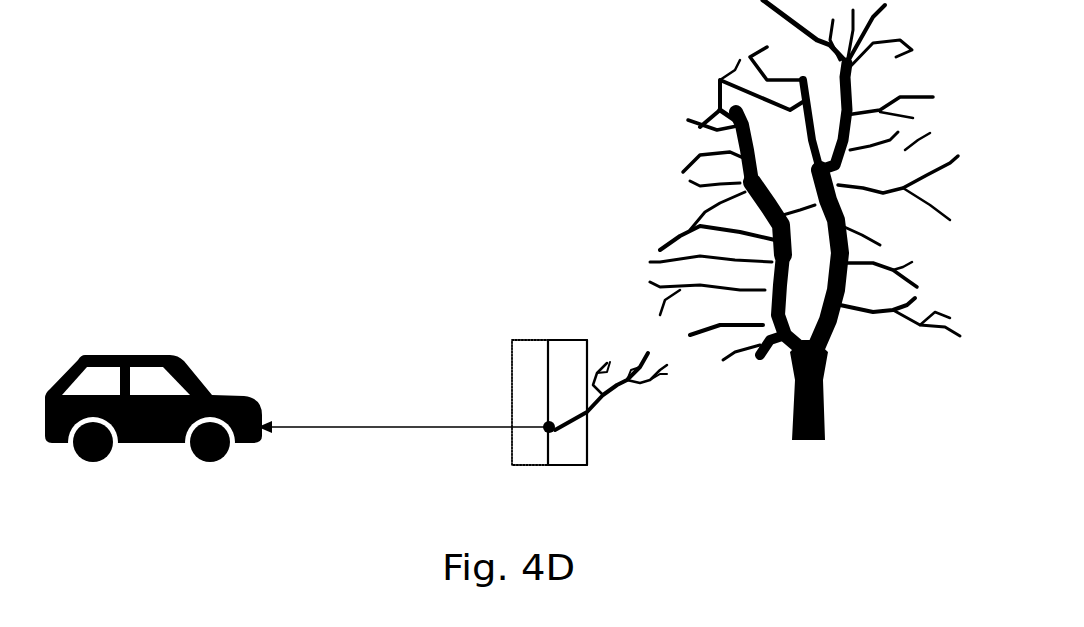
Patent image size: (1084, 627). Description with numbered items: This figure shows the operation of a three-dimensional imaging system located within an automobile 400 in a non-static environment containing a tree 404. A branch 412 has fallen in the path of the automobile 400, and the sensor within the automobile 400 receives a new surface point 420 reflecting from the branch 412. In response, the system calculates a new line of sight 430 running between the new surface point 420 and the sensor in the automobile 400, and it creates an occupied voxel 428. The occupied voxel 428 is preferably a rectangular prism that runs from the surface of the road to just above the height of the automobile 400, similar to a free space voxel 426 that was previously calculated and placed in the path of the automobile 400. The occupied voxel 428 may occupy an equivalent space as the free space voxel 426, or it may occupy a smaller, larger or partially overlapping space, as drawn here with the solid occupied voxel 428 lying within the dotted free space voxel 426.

The automobile 400 is at (168, 346).
The tree 404 is at (688, 120).
The branch 412 is at (653, 402).
The new 3D surface point 420 is at (553, 430).
The free space voxel 426 is at (508, 352).
The occupied voxel 428 is at (580, 340).
The new line of sight 430 is at (393, 425).